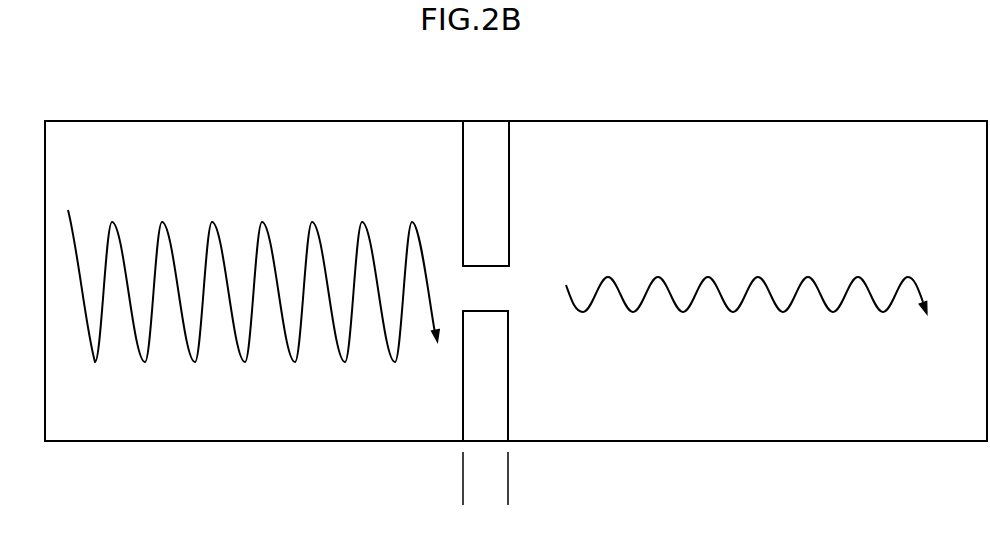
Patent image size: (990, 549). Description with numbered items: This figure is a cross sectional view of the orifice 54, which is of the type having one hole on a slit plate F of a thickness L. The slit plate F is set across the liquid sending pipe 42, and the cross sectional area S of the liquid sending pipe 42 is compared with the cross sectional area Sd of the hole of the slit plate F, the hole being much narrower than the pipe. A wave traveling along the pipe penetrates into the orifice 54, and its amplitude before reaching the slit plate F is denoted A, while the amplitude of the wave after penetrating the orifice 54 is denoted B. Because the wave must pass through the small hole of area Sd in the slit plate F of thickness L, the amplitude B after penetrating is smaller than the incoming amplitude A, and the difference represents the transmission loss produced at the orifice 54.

The liquid sending pipe 42 is at (284, 446).
The orifice 54 is at (753, 118).
The slit plate F is at (488, 130).
The cross sectional area of the liquid sending pipe S is at (495, 180).
The cross sectional area of the hole of the slit plate Sd is at (535, 275).
The amplitude of a penetrating wave A is at (279, 352).
The amplitude of a wave after penetrating B is at (768, 306).
The thickness L is at (499, 498).